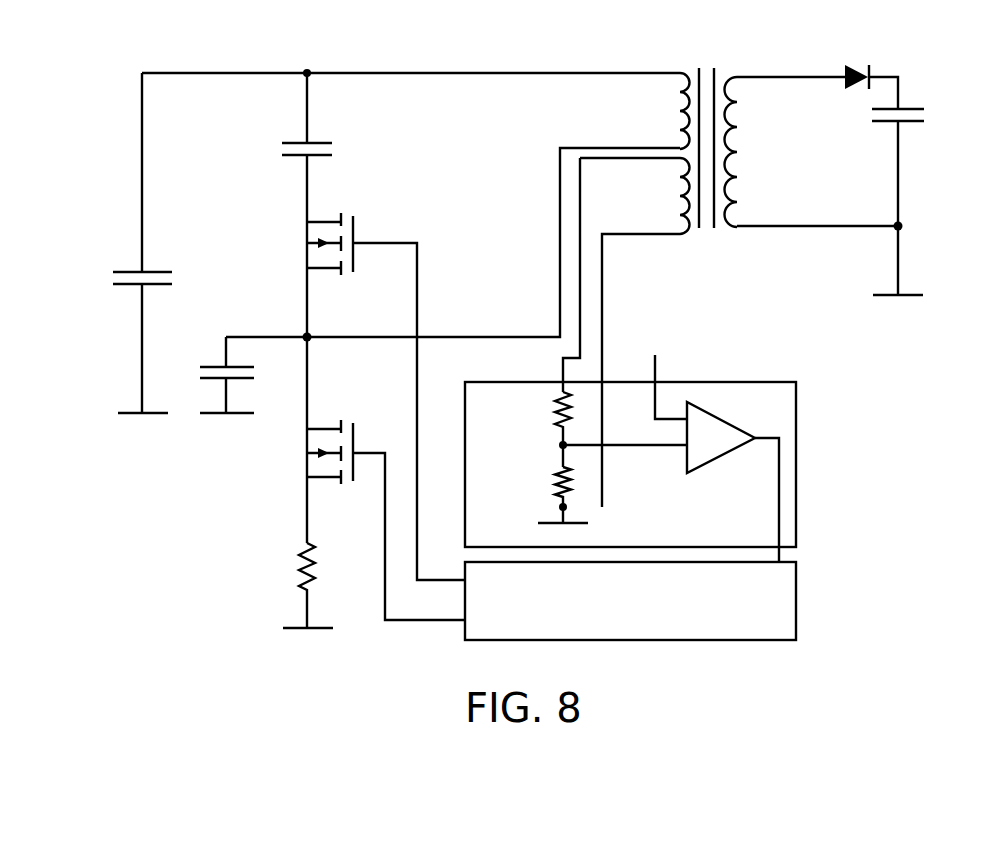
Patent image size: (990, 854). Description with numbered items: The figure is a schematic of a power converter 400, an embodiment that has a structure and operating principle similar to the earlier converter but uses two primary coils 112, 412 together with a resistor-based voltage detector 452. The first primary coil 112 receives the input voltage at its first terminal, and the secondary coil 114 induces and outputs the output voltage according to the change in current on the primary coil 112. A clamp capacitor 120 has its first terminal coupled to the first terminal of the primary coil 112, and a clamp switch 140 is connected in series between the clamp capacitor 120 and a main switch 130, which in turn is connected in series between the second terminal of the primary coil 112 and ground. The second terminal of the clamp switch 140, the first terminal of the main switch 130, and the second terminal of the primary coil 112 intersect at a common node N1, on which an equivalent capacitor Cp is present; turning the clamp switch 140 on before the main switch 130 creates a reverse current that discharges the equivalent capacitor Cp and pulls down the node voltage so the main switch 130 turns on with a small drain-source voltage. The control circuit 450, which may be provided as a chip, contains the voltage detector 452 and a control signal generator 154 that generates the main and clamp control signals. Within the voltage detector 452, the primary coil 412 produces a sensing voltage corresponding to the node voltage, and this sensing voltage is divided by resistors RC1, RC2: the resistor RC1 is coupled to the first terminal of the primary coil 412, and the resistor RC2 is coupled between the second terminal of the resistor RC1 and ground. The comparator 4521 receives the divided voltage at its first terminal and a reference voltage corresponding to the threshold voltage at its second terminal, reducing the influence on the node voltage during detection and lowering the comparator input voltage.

The power converter 400 is at (74, 133).
The primary coil 112 is at (670, 121).
The secondary coil 114 is at (744, 104).
The clamp capacitor 120 is at (276, 150).
The main switch 130 is at (305, 468).
The clamp switch 140 is at (305, 232).
The primary coil 412 is at (664, 200).
The control circuit 450 is at (884, 610).
The voltage detector 452 is at (796, 438).
The comparator 4521 is at (714, 413).
The control signal generator 154 is at (796, 588).
The common node N1 is at (310, 336).
The equivalent capacitor Cp is at (214, 364).
The resistor RC1 is at (550, 405).
The resistor RC2 is at (550, 475).